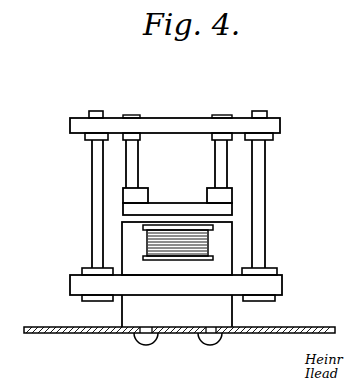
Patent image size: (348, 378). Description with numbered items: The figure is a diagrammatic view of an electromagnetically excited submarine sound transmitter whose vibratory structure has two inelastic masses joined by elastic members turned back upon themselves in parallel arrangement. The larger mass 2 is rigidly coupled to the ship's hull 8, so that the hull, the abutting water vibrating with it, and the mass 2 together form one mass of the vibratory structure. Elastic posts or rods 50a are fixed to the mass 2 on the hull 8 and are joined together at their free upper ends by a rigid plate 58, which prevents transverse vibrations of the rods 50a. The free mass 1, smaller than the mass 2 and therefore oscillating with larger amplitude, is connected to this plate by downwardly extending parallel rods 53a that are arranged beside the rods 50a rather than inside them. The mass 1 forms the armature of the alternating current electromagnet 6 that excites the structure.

The rigid plate 58 is at (177, 125).
The elastic posts or rods 50a is at (93, 184).
The parallel rods 53a is at (215, 165).
The mass 1 is at (157, 212).
The alternating current electromagnet 6 is at (177, 250).
The mass 2 is at (176, 306).
The ship's hull 8 is at (102, 334).